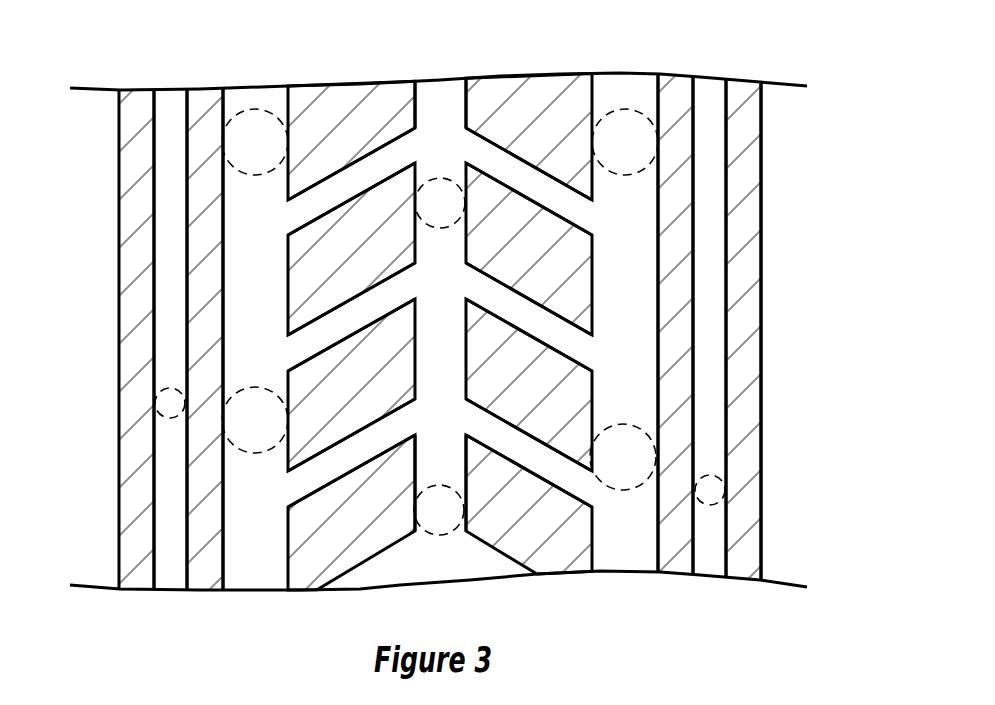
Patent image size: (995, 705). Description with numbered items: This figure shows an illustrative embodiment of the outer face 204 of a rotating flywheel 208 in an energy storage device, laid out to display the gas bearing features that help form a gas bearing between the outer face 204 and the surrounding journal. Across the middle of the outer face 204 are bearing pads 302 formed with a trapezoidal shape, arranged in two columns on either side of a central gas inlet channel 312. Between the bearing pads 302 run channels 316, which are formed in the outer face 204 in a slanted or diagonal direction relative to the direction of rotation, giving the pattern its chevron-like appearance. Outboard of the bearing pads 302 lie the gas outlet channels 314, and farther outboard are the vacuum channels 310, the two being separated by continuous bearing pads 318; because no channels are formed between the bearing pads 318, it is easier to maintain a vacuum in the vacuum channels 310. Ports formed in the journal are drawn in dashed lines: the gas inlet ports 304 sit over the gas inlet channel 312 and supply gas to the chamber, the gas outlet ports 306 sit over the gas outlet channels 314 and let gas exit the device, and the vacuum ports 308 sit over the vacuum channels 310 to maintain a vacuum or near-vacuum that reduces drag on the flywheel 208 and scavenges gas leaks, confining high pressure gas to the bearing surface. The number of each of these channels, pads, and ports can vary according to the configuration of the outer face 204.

The outer face 204 is at (783, 260).
The flywheel 208 is at (762, 355).
The bearing pads 302 is at (345, 100).
The gas inlet ports 304 is at (424, 213).
The gas outlet ports 306 is at (239, 152).
The vacuum ports 308 is at (178, 393).
The vacuum channels 310 is at (172, 333).
The gas inlet channel 312 is at (435, 97).
The gas outlet channels 314 is at (255, 100).
The channels 316 is at (336, 190).
The continuous bearing pads 318 is at (202, 100).